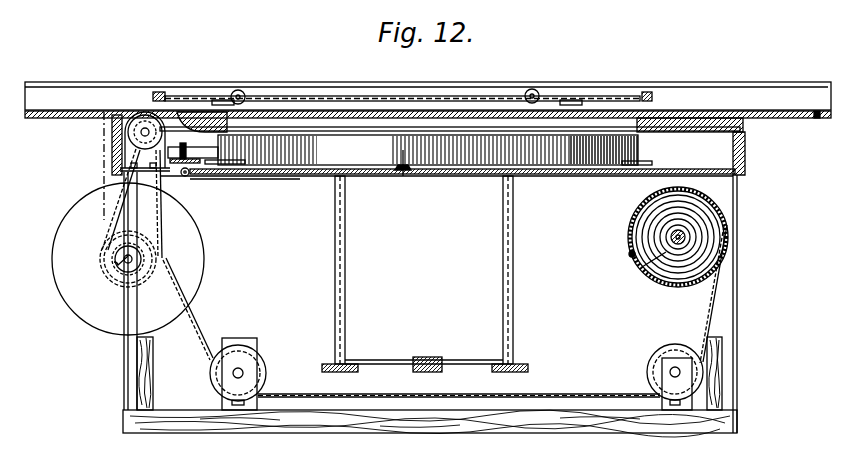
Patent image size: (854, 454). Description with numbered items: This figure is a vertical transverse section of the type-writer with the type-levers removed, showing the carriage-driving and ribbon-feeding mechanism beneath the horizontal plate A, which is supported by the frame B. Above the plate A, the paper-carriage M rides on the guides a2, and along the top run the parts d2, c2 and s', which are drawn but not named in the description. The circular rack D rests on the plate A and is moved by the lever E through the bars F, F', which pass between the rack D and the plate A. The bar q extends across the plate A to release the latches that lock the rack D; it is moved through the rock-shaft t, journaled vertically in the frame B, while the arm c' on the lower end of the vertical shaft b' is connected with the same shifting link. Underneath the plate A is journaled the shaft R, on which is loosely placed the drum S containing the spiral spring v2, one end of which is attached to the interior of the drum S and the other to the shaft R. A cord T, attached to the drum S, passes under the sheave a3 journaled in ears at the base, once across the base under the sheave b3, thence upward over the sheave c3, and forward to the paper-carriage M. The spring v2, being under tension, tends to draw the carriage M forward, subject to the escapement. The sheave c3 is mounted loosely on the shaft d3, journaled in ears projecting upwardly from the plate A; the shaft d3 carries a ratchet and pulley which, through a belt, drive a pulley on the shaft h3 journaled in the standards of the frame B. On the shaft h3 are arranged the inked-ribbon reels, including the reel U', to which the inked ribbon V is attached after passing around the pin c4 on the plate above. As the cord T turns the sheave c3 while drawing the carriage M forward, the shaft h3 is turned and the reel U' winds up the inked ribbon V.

The guides a2 is at (110, 85).
The cord T is at (380, 97).
The clamp d2 is at (222, 100).
The roller c2 is at (241, 91).
The paper-carriage M is at (648, 92).
The pin c4 is at (816, 119).
The horizontal plate A is at (606, 176).
The circular rack D is at (428, 150).
The lever E is at (403, 176).
The arm c' is at (193, 151).
The bar F is at (225, 183).
The bar F' is at (642, 155).
The bar q is at (182, 177).
The strip s' is at (245, 187).
The shaft d3 is at (145, 130).
The sheave c3 is at (124, 137).
The inked ribbon V is at (102, 166).
The inked-ribbon reel U' is at (128, 242).
The shaft h3 is at (118, 270).
The rock-shaft t is at (346, 284).
The vertical shaft b' is at (440, 274).
The sheave b3 is at (247, 373).
The frame B is at (744, 325).
The drum S is at (680, 287).
The shaft R is at (690, 232).
The spiral spring v2 is at (662, 258).
The sheave a3 is at (668, 375).